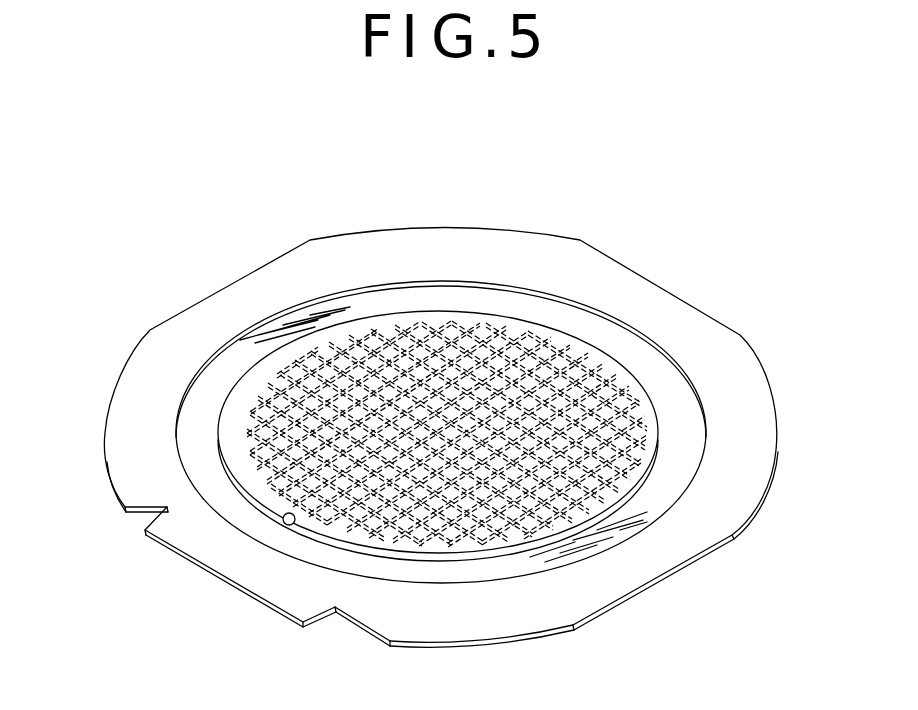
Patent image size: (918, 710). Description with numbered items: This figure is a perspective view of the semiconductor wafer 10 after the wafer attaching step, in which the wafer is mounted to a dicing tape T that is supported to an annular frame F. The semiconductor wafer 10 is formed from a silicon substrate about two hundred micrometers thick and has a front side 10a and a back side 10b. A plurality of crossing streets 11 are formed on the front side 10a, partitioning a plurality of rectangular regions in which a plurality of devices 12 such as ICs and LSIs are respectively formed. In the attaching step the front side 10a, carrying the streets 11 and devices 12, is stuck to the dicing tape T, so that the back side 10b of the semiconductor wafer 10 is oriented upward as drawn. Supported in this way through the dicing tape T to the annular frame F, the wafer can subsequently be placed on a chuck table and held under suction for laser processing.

The semiconductor wafer 10 is at (448, 434).
The front side 10a is at (450, 562).
The back side 10b is at (573, 343).
The streets 11 is at (597, 441).
The devices 12 is at (610, 377).
The dicing tape T is at (218, 388).
The annular frame F is at (737, 377).